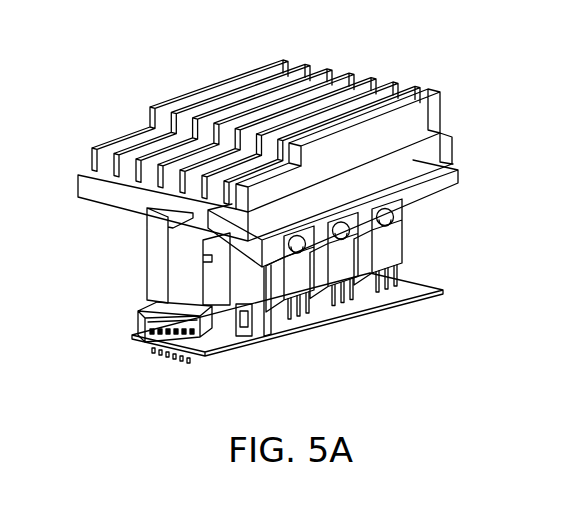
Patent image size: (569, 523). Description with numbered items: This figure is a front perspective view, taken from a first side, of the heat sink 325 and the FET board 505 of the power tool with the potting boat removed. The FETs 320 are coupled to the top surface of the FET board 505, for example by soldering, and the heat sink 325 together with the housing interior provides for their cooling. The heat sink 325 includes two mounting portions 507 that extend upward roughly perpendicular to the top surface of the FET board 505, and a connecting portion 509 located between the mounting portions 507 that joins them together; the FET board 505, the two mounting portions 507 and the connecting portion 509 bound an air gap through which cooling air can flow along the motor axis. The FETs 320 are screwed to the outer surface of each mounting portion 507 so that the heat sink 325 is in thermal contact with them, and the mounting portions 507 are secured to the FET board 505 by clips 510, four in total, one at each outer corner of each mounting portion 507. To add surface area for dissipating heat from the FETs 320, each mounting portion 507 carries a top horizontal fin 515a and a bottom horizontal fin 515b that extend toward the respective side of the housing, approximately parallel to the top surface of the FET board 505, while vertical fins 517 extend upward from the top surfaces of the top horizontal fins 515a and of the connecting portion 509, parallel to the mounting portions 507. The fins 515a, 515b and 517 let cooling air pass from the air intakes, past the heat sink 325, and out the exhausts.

The heat sink 325 is at (461, 121).
The vertical fins 517 is at (328, 68).
The connecting portion 509 is at (170, 203).
The top horizontal fin 515a is at (233, 207).
The bottom horizontal fin 515b is at (212, 237).
The FETs 320 is at (394, 268).
The FET board 505 is at (420, 286).
The mounting portion 507 is at (150, 300).
The clip 510 is at (240, 345).